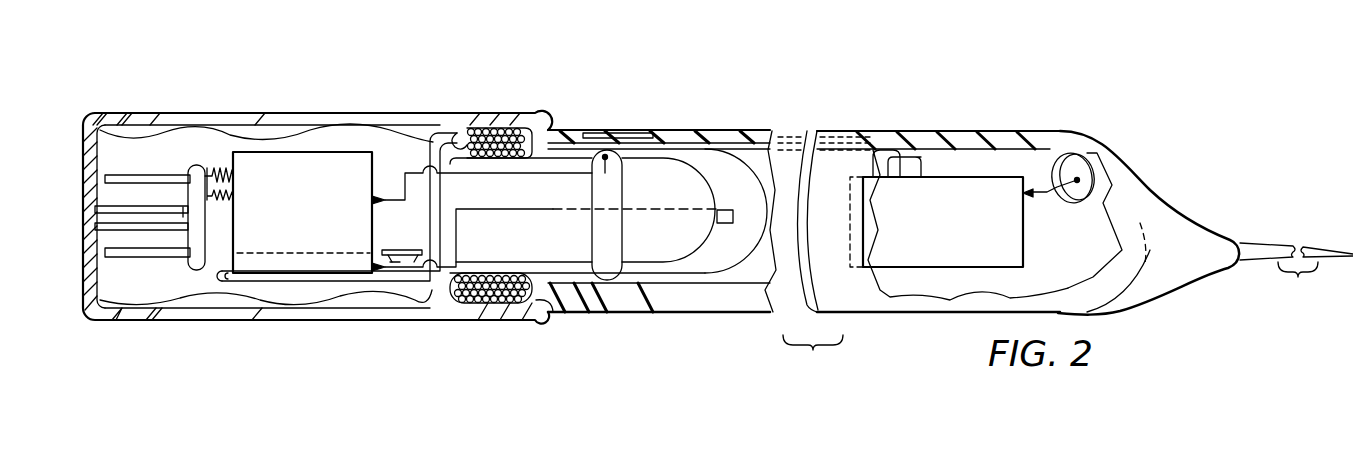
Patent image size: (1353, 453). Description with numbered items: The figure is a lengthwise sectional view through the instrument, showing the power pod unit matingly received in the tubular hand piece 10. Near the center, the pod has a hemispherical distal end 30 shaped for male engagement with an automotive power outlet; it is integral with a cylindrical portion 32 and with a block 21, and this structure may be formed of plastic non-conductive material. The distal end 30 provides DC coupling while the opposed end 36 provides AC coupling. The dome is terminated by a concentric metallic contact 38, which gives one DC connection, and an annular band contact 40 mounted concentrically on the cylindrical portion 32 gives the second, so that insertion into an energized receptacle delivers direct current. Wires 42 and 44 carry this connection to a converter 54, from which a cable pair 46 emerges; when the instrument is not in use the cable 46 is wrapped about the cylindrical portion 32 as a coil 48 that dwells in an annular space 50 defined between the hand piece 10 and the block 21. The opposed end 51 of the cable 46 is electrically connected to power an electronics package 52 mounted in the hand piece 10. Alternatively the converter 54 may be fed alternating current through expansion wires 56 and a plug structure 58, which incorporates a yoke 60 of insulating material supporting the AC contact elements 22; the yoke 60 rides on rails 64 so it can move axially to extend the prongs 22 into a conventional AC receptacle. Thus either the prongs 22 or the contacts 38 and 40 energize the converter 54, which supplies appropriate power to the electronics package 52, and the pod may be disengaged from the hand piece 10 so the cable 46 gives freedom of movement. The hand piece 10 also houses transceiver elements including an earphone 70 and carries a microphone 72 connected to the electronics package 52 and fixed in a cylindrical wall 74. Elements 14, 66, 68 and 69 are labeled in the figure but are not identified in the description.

The hand piece 10 is at (990, 110).
The probe shaft 14 is at (1257, 247).
The block 21 is at (540, 323).
The AC contact elements 22 is at (125, 176).
The hemispherical distal end 30 is at (685, 247).
The cylindrical portion 32 is at (567, 247).
The opposed end 36 is at (80, 150).
The concentric metallic contact 38 is at (730, 210).
The annular band contact 40 is at (612, 243).
The wire 42 is at (490, 209).
The wire 44 is at (483, 174).
The cable pair 46 is at (457, 142).
The coil 48 is at (493, 133).
The annular space 50 is at (547, 308).
The opposed end of the cable 51 is at (917, 168).
The electronics package 52 is at (936, 222).
The converter 54 is at (302, 212).
The expansion wires 56 is at (218, 172).
The plug structure 58 is at (160, 170).
The yoke 60 is at (197, 272).
The rails 64 is at (115, 208).
The converter connection line 66 is at (300, 253).
The switch plate 68 is at (400, 250).
The switch contact 69 is at (393, 262).
The earphone 70 is at (1067, 162).
The microphone 72 is at (617, 130).
The cylindrical wall 74 is at (667, 138).